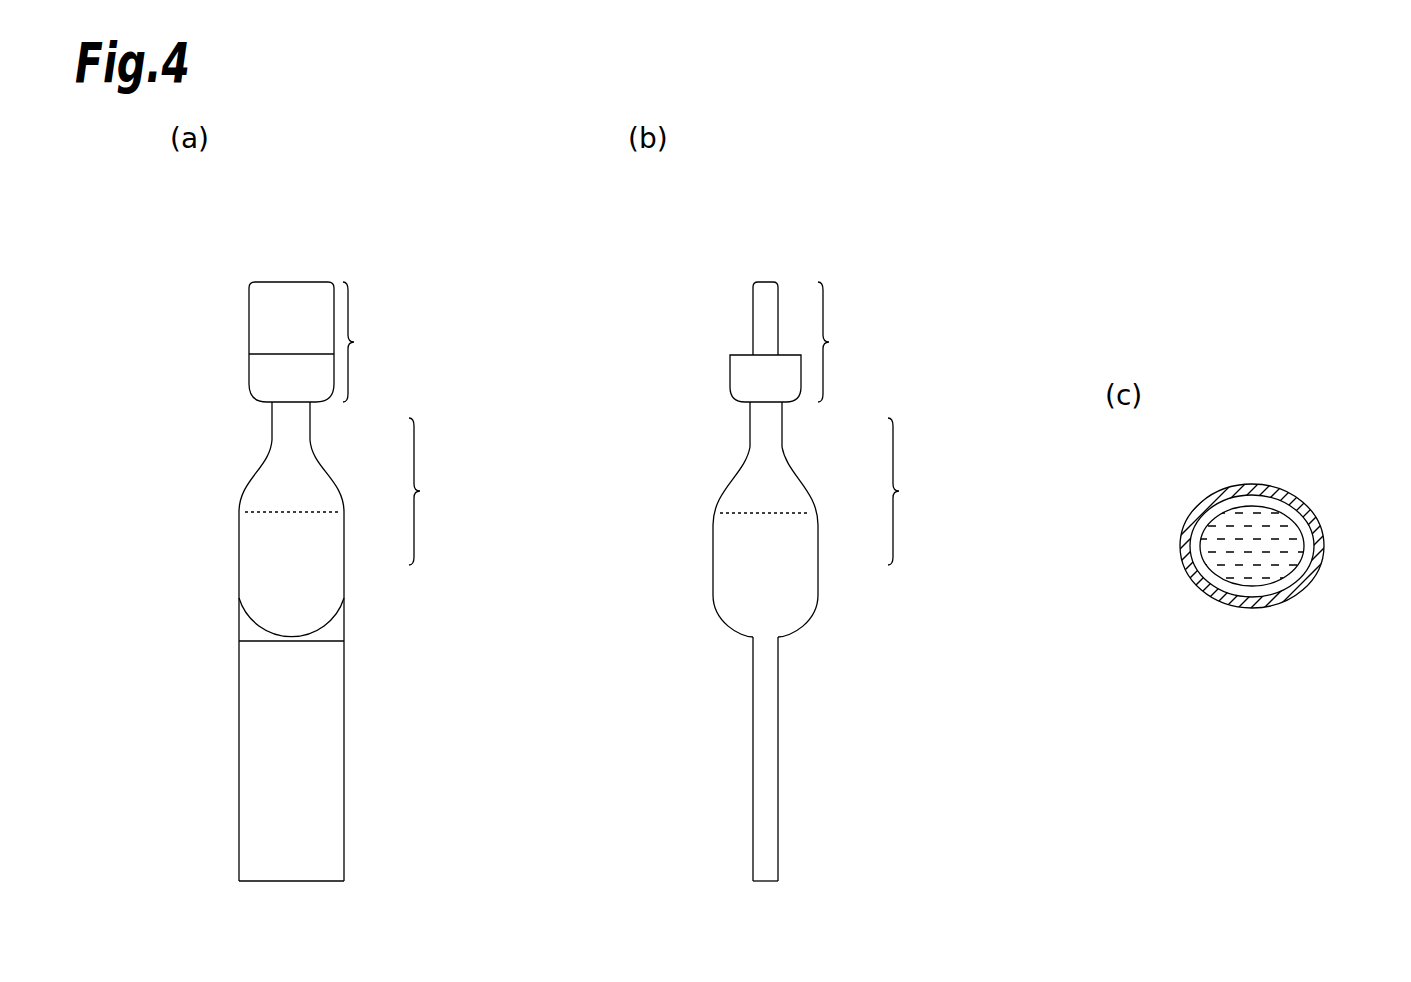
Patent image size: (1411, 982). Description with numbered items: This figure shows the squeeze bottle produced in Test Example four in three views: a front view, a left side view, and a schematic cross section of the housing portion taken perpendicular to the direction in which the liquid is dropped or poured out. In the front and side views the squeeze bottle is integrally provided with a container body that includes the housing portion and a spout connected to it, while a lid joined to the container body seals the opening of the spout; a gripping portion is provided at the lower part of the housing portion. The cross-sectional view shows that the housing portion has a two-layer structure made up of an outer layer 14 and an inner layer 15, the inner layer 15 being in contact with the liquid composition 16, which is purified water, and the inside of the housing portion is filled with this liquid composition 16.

The outer layer 14 is at (1322, 550).
The inner layer 15 is at (1280, 584).
The liquid composition 16 is at (1238, 560).